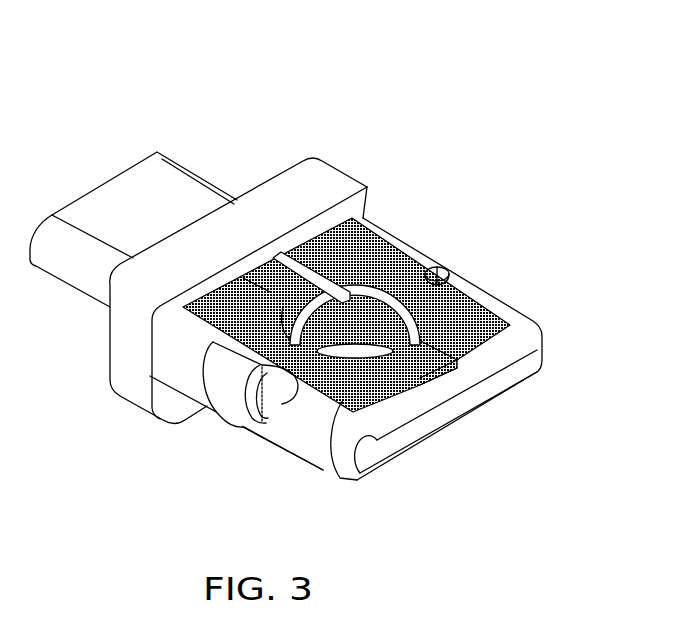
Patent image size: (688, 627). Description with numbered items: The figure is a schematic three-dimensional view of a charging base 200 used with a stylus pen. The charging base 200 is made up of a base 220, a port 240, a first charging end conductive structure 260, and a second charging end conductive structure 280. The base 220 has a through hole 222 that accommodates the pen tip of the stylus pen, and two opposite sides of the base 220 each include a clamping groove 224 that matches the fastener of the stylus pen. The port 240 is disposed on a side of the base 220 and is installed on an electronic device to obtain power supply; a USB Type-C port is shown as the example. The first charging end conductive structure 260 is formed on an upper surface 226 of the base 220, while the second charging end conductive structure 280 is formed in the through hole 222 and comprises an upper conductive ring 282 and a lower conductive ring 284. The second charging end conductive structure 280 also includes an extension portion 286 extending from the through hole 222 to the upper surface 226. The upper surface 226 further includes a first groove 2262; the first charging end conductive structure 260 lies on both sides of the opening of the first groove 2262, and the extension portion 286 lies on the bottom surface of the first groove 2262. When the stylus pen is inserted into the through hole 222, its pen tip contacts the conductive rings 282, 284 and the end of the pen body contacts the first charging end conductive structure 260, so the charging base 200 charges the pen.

The charging base 200 is at (324, 96).
The base 220 is at (398, 248).
The through hole 222 is at (353, 292).
The first groove 2262 is at (268, 272).
The clamping groove 224 is at (465, 277).
The upper surface 226 is at (215, 385).
The port 240 is at (112, 178).
The first charging end conductive structure 260 is at (480, 320).
The second charging end conductive structure 280 is at (547, 443).
The upper conductive ring 282 is at (343, 356).
The lower conductive ring 284 is at (350, 354).
The extension portion 286 is at (446, 380).